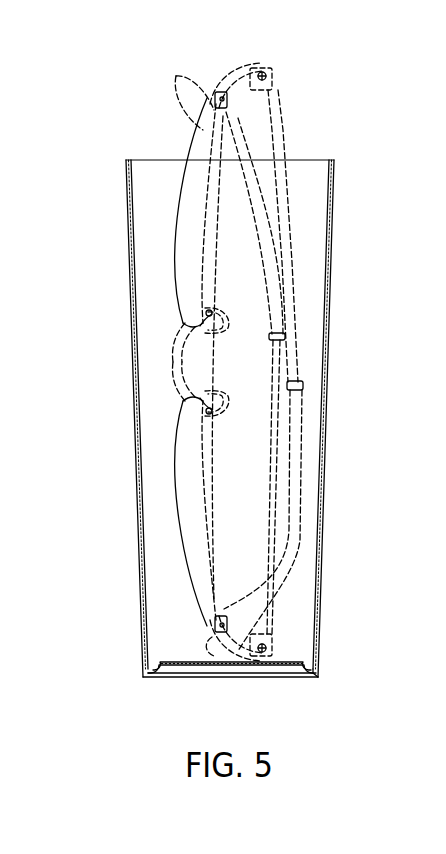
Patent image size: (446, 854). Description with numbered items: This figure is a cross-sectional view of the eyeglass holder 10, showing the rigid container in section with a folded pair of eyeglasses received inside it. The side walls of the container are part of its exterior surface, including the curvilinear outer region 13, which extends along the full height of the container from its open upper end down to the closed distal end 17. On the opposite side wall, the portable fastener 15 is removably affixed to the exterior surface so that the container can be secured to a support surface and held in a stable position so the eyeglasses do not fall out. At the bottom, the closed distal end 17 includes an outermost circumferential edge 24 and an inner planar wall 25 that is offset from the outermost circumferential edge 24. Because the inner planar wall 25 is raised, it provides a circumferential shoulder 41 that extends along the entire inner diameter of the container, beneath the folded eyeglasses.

The eyeglass holder 10 is at (306, 150).
The curvilinear outer region 13 is at (328, 262).
The portable fastener 15 is at (128, 213).
The closed distal end 17 is at (241, 684).
The outermost circumferential edge 24 is at (298, 677).
The inner planar wall 25 is at (197, 665).
The circumferential shoulder 41 is at (314, 672).